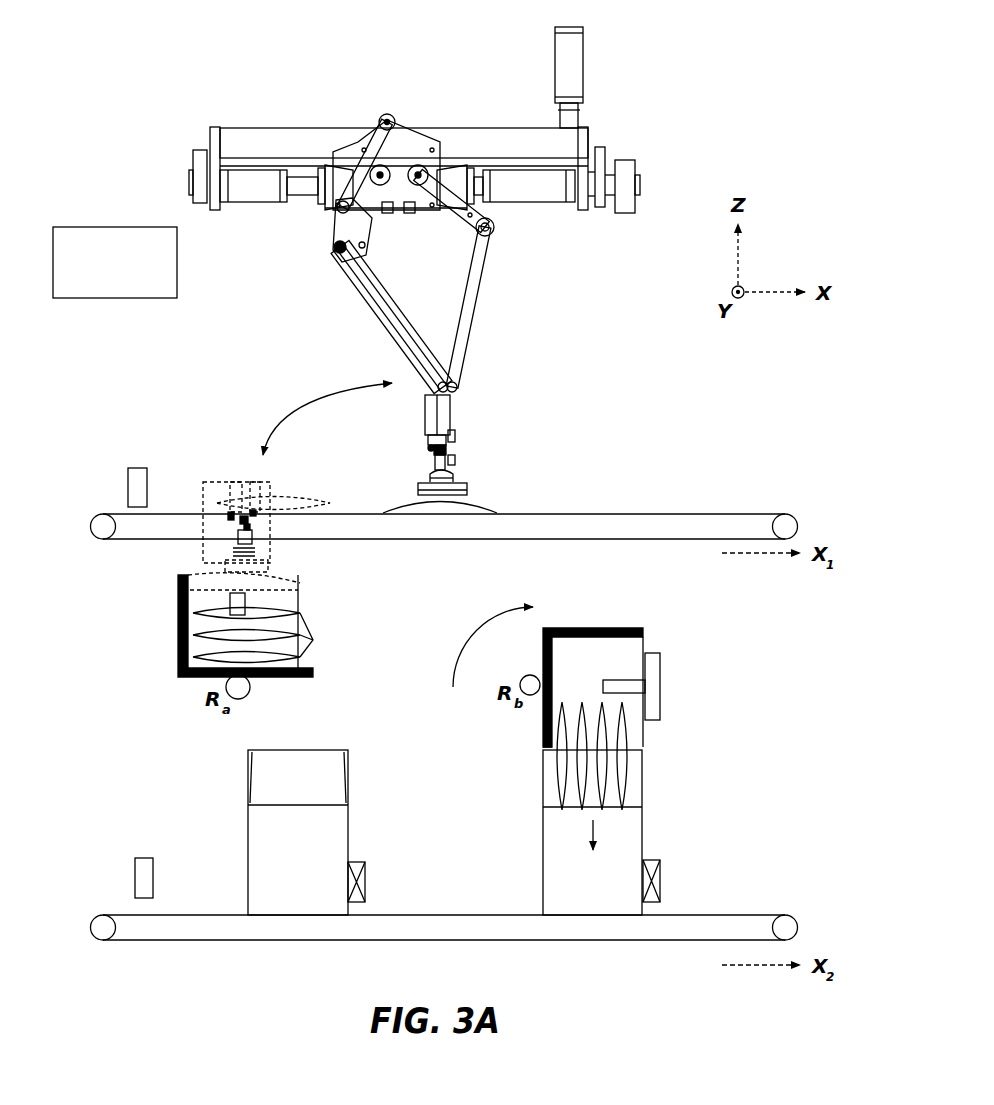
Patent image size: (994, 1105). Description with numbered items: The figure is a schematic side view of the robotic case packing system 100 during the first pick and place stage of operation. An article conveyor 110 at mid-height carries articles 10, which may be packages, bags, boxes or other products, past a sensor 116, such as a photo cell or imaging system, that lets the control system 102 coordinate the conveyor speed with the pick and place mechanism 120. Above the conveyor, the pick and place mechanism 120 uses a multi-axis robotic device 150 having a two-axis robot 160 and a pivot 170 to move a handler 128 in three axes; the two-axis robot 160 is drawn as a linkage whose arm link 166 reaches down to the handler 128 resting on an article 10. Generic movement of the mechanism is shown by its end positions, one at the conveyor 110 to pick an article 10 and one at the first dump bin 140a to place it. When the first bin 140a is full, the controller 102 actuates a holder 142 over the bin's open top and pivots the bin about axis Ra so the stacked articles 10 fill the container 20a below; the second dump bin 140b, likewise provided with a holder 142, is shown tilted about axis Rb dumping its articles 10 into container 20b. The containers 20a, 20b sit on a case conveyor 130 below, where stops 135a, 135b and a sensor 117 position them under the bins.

The robotic case packing system 100 is at (98, 78).
The control system 102 is at (70, 226).
The pick and place mechanism 120 is at (258, 104).
The multi-axis robotic device 150 is at (651, 73).
The two-axis robot 160 is at (433, 286).
The arm link 166 is at (478, 318).
The pivot 170 is at (642, 181).
The handler 128 is at (456, 481).
The articles 10 is at (497, 507).
The article conveyor 110 is at (705, 506).
The sensor 116 is at (128, 483).
The holder 142 is at (203, 549).
The first dump bin 140a is at (178, 626).
The second dump bin 140b is at (621, 628).
The first container 20a is at (248, 857).
The second container 20b is at (543, 861).
The first stop 135a is at (366, 877).
The second stop 135b is at (661, 877).
The sensor 117 is at (135, 877).
The case conveyor 130 is at (135, 943).